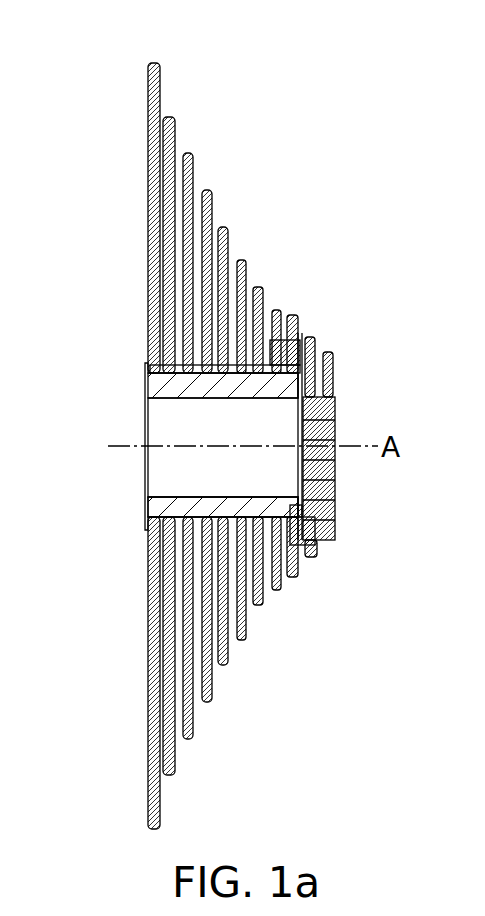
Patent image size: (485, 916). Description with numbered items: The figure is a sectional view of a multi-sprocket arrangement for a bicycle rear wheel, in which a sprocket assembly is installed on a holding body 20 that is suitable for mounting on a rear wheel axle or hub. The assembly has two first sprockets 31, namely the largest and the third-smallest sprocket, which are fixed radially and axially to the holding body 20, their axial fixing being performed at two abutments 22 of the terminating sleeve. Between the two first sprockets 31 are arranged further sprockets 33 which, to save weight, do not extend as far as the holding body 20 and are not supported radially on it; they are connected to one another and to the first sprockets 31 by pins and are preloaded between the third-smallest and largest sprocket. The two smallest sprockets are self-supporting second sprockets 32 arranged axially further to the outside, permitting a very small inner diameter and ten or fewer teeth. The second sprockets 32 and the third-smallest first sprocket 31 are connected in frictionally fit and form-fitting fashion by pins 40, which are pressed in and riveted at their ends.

The holding body 20 is at (130, 394).
The abutments 22 is at (303, 512).
The first sprockets 31 is at (157, 63).
The second sprockets 32 is at (312, 340).
The further sprockets 33 is at (175, 106).
The pins 40 is at (302, 533).